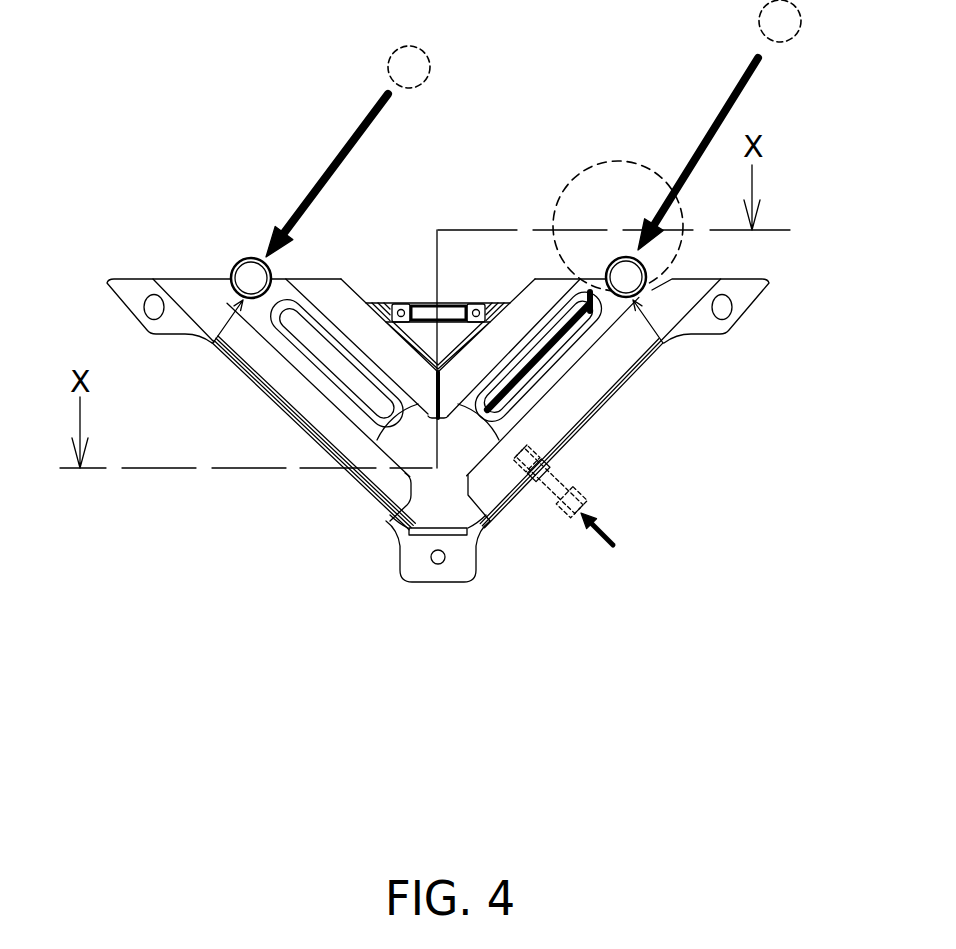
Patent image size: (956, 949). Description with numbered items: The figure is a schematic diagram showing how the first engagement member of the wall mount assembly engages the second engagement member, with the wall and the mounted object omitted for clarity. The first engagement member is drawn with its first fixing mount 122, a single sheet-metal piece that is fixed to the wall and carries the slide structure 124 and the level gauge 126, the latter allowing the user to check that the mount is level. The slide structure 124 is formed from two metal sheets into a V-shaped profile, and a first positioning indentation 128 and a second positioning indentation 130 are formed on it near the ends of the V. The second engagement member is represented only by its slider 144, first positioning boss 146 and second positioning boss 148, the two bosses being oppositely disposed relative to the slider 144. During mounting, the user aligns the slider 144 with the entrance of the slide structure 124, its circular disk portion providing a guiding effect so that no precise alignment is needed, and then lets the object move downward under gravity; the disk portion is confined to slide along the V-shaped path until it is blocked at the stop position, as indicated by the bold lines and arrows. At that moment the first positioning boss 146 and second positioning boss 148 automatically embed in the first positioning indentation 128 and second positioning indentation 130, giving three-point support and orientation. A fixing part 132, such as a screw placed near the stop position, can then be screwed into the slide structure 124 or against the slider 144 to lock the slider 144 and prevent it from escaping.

The first fixing mount 122 is at (467, 545).
The slide structure 124 is at (578, 408).
The level gauge 126 is at (445, 311).
The first positioning indentation 128 is at (663, 345).
The second positioning indentation 130 is at (212, 346).
The fixing part 132 is at (535, 496).
The slider 144 is at (398, 530).
The first positioning boss 146 is at (632, 274).
The second positioning boss 148 is at (236, 272).